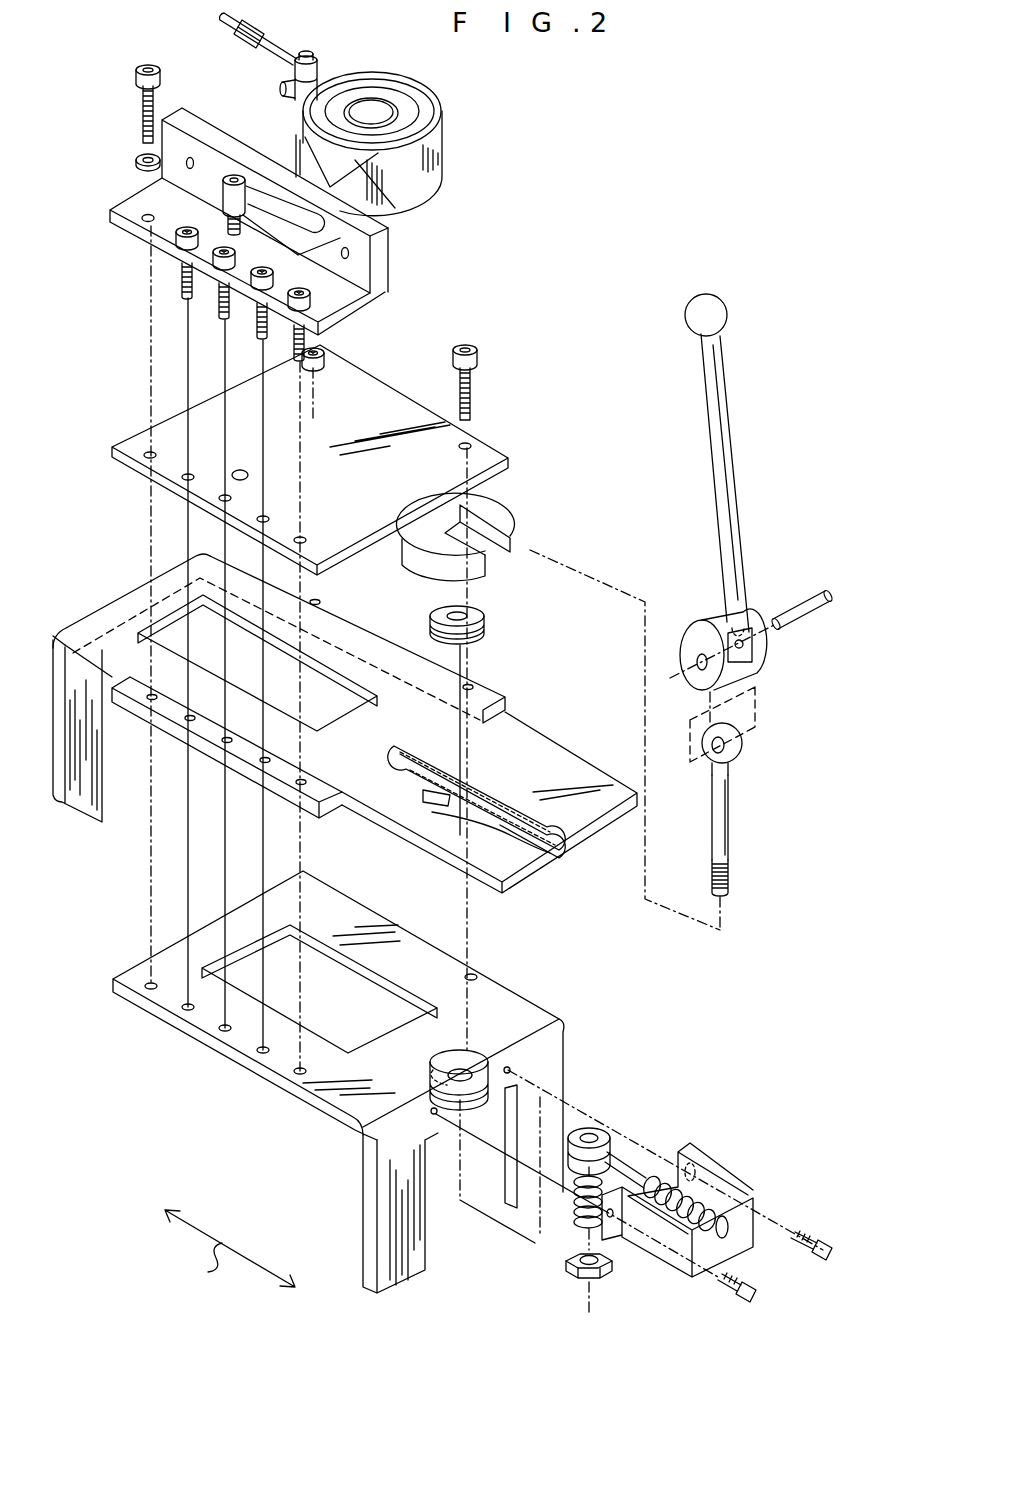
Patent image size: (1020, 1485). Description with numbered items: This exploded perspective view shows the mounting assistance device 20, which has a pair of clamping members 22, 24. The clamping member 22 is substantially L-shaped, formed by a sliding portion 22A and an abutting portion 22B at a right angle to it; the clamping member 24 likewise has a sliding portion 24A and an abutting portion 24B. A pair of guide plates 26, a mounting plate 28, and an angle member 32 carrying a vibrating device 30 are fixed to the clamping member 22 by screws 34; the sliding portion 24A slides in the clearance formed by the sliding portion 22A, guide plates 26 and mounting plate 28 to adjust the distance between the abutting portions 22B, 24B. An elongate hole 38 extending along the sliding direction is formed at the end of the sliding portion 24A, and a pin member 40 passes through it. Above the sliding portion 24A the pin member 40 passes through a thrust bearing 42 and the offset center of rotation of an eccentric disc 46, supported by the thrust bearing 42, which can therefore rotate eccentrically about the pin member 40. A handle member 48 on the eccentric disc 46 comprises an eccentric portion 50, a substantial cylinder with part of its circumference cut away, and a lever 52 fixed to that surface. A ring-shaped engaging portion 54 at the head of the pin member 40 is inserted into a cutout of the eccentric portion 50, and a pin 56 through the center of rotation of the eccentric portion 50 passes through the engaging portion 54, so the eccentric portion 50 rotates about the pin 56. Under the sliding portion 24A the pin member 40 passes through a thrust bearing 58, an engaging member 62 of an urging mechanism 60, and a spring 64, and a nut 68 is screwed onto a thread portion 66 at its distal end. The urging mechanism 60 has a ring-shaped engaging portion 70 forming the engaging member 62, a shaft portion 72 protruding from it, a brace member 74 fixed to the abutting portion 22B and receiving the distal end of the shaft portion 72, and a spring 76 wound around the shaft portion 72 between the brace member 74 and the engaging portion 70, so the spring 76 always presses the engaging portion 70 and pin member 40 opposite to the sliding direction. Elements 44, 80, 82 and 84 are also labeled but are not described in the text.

The mounting assistance device 20 is at (657, 280).
The clamping member 22 is at (338, 1082).
The sliding portion 22A is at (216, 1037).
The abutting portion 22B is at (366, 1212).
The clamping member 24 is at (344, 710).
The sliding portion 24A is at (489, 790).
The abutting portion 24B is at (51, 793).
The guide plates 26 is at (366, 629).
The mounting plate 28 is at (397, 420).
The vibrating device 30 is at (442, 157).
The angle member 32 is at (135, 199).
The screws 34 is at (465, 345).
The elongate hole 38 is at (507, 793).
The pin member 40 is at (749, 838).
The thrust bearing 42 is at (484, 615).
The slit 44 is at (507, 553).
The eccentric disc 46 is at (491, 532).
The handle member 48 is at (752, 492).
The eccentric portion 50 is at (706, 627).
The lever 52 is at (731, 492).
The engaging portion 54 is at (740, 750).
The pin 56 is at (812, 608).
The thrust bearing 58 is at (478, 1063).
The urging mechanism 60 is at (717, 1191).
The engaging member 62 is at (586, 1194).
The spring 64 is at (570, 1215).
The thread portion 66 is at (730, 883).
The nut 68 is at (577, 1280).
The engaging portion 70 is at (590, 1128).
The shaft portion 72 is at (630, 1167).
The brace member 74 is at (729, 1249).
The spring 76 is at (657, 1173).
The knob 80 is at (213, 167).
The vertical plate 82 is at (373, 237).
The clamp lever 84 is at (268, 193).